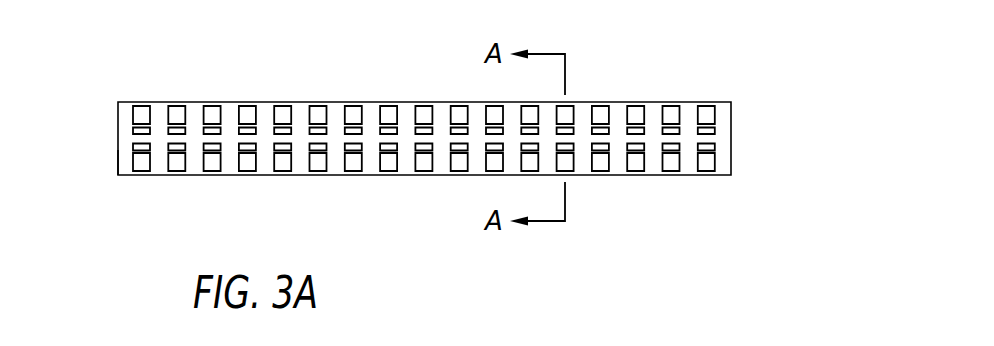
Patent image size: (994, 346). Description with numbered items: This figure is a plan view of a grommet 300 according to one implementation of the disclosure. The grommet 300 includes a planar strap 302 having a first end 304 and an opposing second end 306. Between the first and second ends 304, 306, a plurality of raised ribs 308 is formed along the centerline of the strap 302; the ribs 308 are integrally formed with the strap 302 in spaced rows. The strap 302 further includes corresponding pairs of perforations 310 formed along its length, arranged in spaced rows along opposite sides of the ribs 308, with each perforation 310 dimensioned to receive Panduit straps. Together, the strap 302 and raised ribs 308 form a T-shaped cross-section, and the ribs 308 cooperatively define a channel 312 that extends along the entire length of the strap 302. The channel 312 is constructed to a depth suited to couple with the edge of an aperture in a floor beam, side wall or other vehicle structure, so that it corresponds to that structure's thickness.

The grommet 300 is at (425, 126).
The planar strap 302 is at (685, 162).
The first end 304 is at (731, 117).
The second end 306 is at (117, 160).
The raised ribs 308 is at (597, 148).
The perforations 310 is at (178, 104).
The channel 312 is at (712, 137).